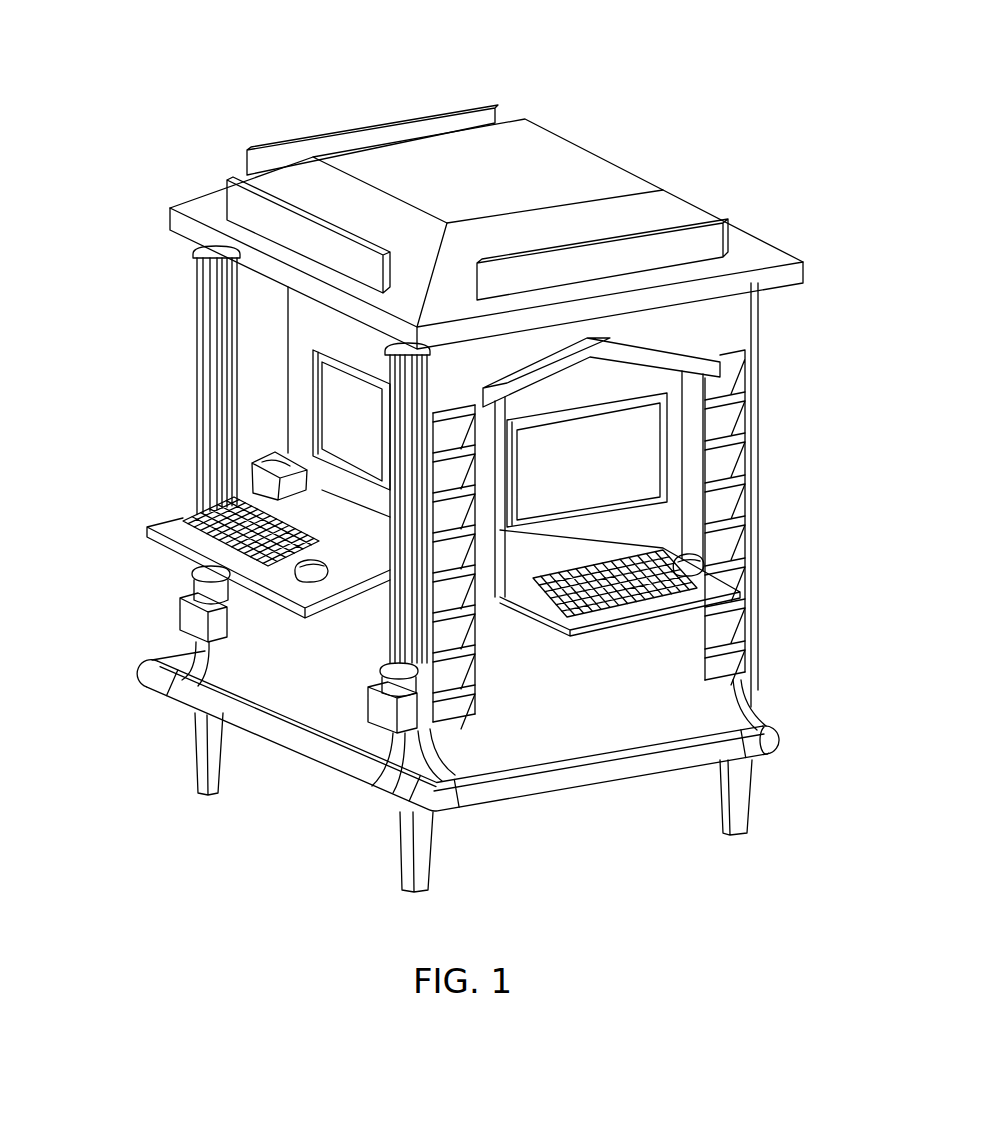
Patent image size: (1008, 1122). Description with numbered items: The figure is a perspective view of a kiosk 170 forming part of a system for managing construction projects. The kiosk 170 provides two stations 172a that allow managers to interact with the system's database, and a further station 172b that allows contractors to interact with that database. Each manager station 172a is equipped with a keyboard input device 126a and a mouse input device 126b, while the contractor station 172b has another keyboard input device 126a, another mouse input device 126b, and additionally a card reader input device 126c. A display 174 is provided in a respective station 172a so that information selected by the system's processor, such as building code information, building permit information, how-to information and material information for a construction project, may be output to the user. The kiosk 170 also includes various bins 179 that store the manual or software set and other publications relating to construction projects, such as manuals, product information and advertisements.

The kiosk 170 is at (464, 476).
The station 172a is at (318, 95).
The station 172b is at (255, 828).
The display 174 is at (343, 415).
The bins 179 is at (730, 417).
The keyboard input device 126a is at (197, 538).
The mouse input device 126b is at (300, 578).
The card reader input device 126c is at (263, 482).